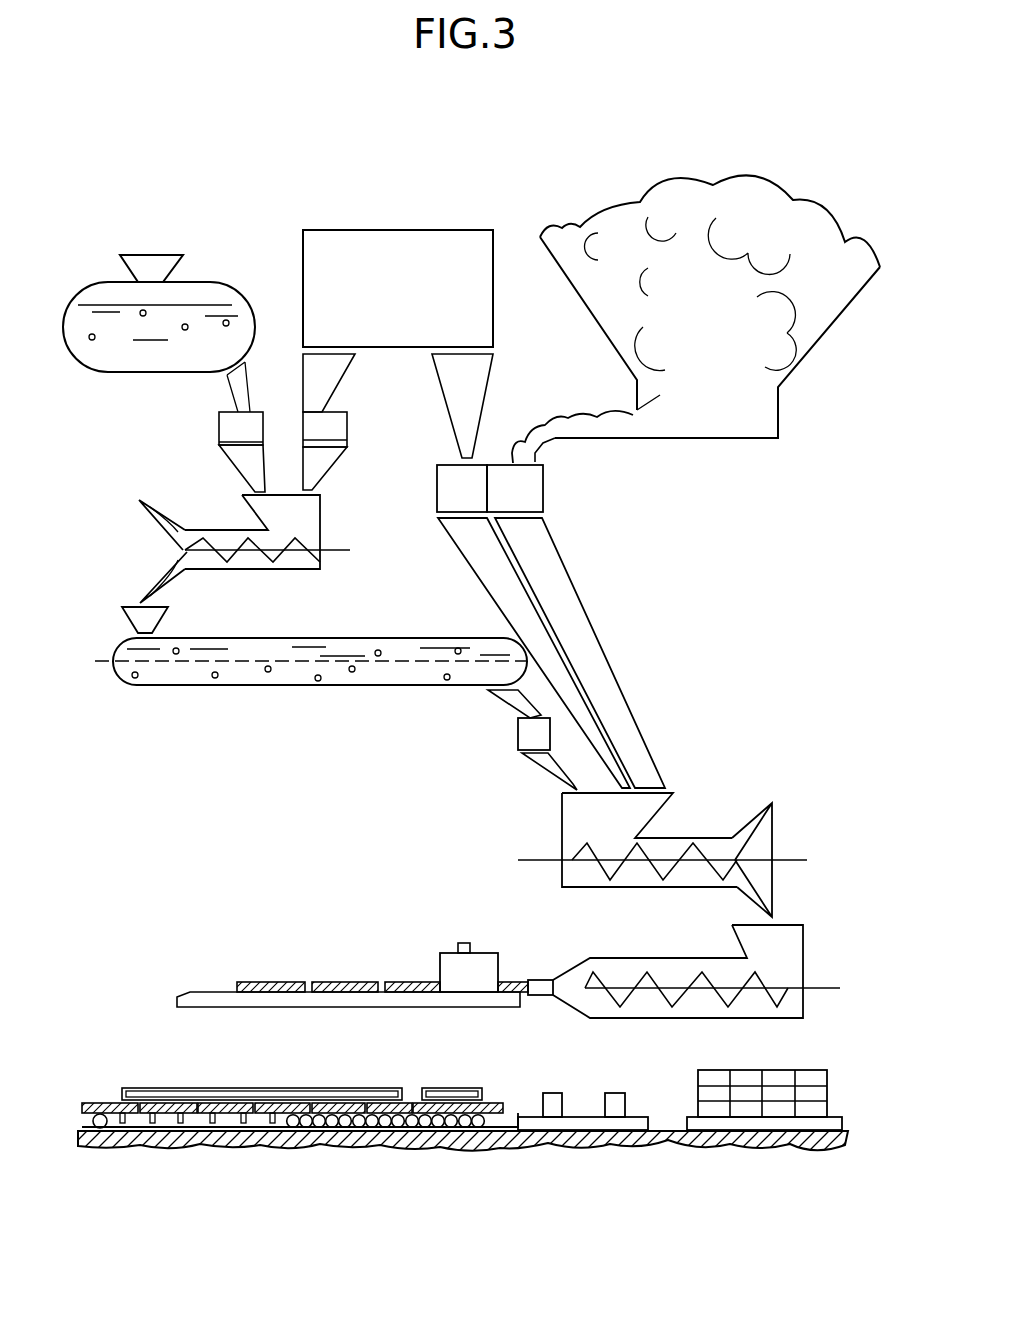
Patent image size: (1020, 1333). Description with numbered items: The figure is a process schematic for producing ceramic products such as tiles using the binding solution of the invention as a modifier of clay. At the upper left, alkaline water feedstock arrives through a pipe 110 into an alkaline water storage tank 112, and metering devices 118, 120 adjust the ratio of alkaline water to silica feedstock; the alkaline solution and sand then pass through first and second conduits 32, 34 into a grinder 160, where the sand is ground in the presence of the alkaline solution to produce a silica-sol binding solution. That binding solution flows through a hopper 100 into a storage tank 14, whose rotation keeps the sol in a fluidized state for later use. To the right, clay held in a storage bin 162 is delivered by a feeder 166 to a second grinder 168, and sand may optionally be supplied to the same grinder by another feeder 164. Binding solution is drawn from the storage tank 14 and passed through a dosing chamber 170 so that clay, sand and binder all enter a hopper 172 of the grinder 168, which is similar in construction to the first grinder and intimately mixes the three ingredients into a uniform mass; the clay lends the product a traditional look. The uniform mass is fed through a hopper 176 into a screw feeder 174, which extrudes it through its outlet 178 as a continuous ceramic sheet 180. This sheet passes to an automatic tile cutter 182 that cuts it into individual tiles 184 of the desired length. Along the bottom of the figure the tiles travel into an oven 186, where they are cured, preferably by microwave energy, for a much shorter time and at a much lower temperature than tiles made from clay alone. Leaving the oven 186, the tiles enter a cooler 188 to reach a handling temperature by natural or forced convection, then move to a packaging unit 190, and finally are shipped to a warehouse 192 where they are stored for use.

The storage tank 14 is at (285, 672).
The first conduit 32 is at (238, 471).
The second conduit 34 is at (330, 470).
The hopper 100 is at (136, 624).
The pipe 110 is at (420, 245).
The alkaline water storage tank 112 is at (200, 292).
The metering device 118 is at (218, 424).
The metering device 120 is at (340, 432).
The grinder 160 is at (297, 565).
The storage bin 162 is at (808, 213).
The feeder 164 is at (440, 501).
The feeder 166 is at (533, 500).
The grinder 168 is at (626, 876).
The dosing chamber 170 is at (523, 735).
The hopper 172 is at (572, 806).
The screw feeder 174 is at (628, 968).
The hopper 176 is at (790, 945).
The die 178 is at (540, 980).
The continuous ceramic sheet 180 is at (522, 980).
The automatic tile cutter 182 is at (453, 965).
The individual tiles 184 is at (277, 980).
The oven 186 is at (195, 1090).
The cooler 188 is at (452, 1088).
The packaging unit 190 is at (550, 1093).
The warehouse 192 is at (725, 1070).